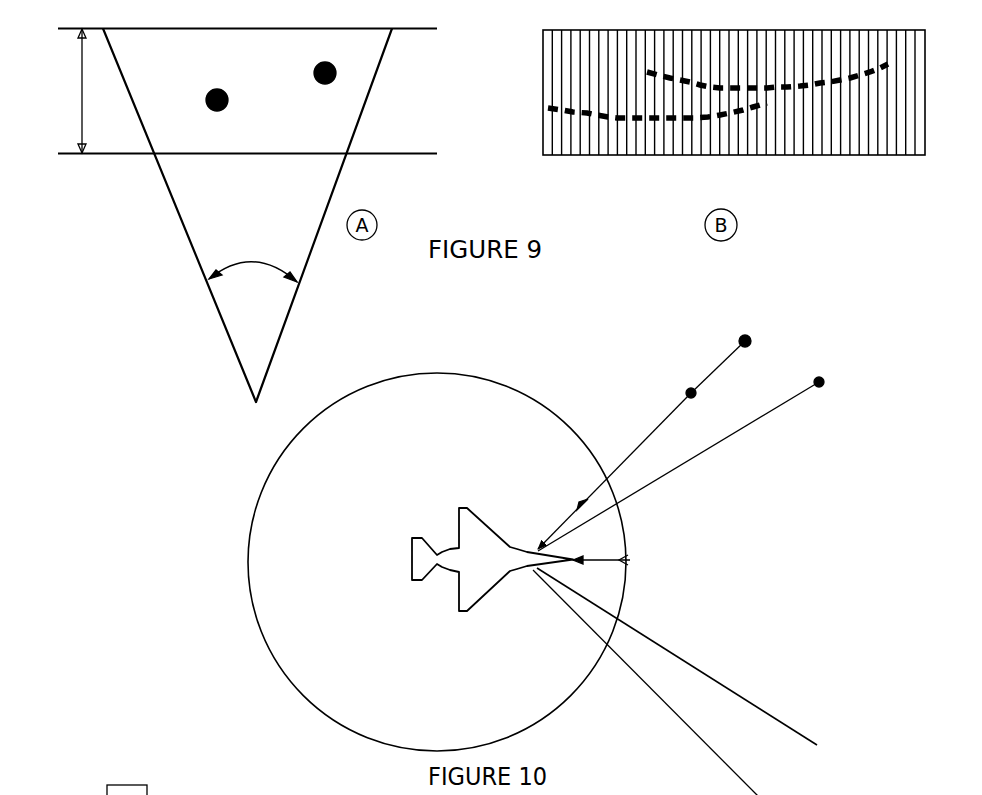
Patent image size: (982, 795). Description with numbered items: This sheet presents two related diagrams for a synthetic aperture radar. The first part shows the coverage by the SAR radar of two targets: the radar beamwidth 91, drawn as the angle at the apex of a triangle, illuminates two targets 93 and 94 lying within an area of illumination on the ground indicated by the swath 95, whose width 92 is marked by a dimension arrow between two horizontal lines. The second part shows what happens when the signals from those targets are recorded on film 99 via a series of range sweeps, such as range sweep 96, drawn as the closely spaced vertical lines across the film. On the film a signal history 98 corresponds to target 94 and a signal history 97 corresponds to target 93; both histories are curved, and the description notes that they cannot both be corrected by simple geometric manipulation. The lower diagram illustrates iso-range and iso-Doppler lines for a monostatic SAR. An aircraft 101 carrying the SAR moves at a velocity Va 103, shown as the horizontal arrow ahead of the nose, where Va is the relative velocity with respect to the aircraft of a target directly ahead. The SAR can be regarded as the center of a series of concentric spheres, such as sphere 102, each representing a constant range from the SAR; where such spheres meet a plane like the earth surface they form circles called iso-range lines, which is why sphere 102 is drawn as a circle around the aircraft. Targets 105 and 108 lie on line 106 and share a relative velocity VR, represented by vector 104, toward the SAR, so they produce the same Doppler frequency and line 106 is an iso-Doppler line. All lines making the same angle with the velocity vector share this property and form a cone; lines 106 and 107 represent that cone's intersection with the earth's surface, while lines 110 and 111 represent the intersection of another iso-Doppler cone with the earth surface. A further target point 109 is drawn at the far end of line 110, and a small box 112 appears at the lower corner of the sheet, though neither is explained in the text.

In FIG. 9, the radar beamwidth 91 is at (253, 262).
In FIG. 9, the swath width 92 is at (81, 97).
In FIG. 9, the target 93 is at (229, 102).
In FIG. 9, the target 94 is at (316, 66).
In FIG. 9, the swath 95 is at (349, 115).
In FIG. 9, the range sweep 96 is at (868, 133).
In FIG. 9, the signal history 97 is at (652, 125).
In FIG. 9, the signal history 98 is at (767, 85).
In FIG. 9, the film 99 is at (546, 67).
In FIG. 10, the aircraft 101 is at (462, 508).
In FIG. 10, the sphere 102 is at (532, 396).
In FIG. 10, the velocity Va 103 is at (607, 562).
In FIG. 10, the vector VR 104 is at (558, 522).
In FIG. 10, the target 105 is at (739, 341).
In FIG. 10, the iso-Doppler line 106 is at (646, 437).
In FIG. 10, the line 107 is at (690, 728).
In FIG. 10, the target 108 is at (687, 391).
In FIG. 10, the target position 109 is at (824, 387).
In FIG. 10, the line 110 is at (706, 452).
In FIG. 10, the line 111 is at (746, 696).
In FIG. 10, the box 112 is at (176, 790).